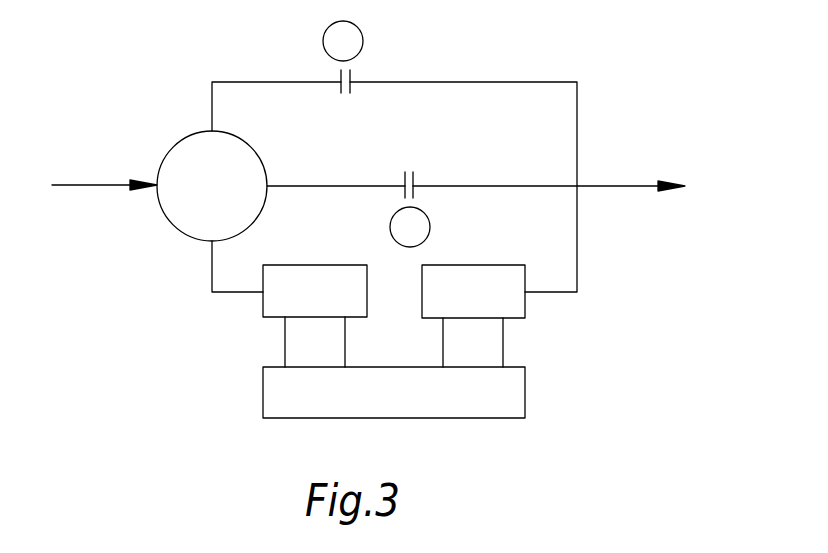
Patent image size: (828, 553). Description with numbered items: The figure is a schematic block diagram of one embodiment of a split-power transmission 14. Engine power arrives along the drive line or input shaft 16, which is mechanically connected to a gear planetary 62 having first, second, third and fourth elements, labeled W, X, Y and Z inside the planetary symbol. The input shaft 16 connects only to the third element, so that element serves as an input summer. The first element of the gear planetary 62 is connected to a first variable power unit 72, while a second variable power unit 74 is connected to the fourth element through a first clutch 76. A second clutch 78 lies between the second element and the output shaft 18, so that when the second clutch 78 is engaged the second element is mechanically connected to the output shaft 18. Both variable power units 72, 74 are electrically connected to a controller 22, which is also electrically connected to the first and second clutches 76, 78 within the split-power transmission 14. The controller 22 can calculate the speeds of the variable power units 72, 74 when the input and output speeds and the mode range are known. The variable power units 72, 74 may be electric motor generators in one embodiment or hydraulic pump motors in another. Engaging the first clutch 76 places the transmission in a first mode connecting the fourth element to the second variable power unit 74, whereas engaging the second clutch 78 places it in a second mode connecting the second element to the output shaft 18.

The split-power transmission 14 is at (175, 42).
The input shaft 16 is at (93, 186).
The output shaft 18 is at (618, 186).
The gear planetary 62 is at (255, 225).
The first clutch 76 is at (352, 73).
The second clutch 78 is at (414, 176).
The first variable power unit 72 is at (263, 310).
The second variable power unit 74 is at (517, 318).
The controller 22 is at (482, 418).